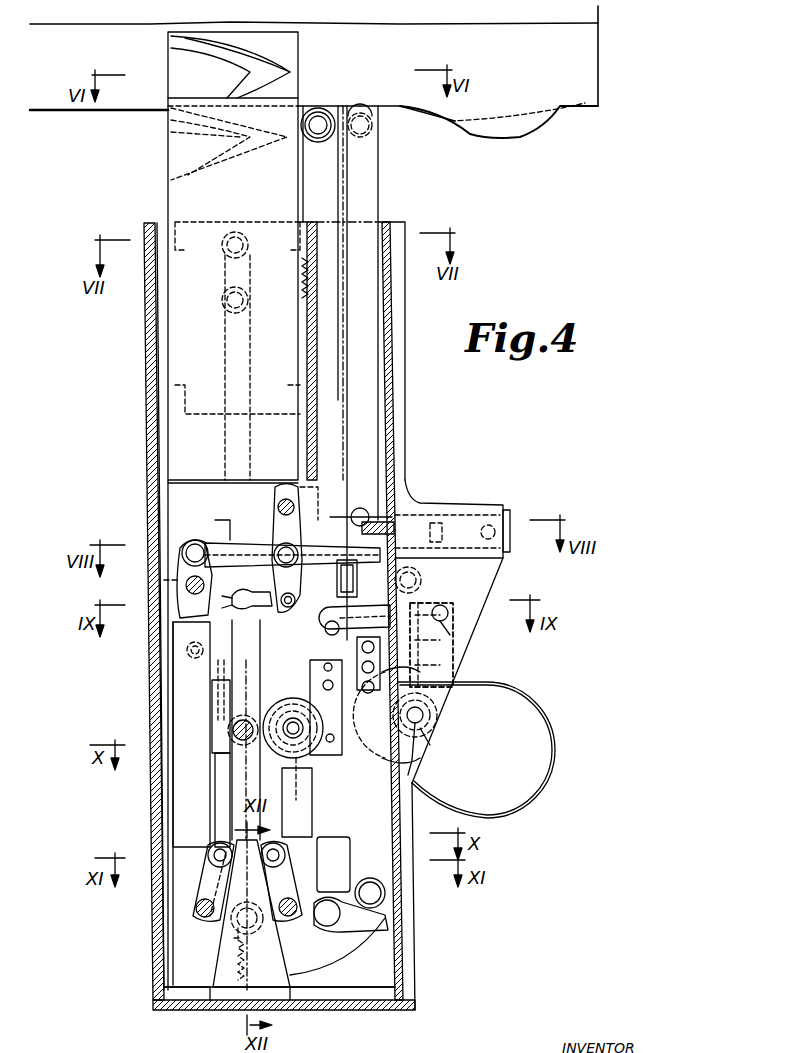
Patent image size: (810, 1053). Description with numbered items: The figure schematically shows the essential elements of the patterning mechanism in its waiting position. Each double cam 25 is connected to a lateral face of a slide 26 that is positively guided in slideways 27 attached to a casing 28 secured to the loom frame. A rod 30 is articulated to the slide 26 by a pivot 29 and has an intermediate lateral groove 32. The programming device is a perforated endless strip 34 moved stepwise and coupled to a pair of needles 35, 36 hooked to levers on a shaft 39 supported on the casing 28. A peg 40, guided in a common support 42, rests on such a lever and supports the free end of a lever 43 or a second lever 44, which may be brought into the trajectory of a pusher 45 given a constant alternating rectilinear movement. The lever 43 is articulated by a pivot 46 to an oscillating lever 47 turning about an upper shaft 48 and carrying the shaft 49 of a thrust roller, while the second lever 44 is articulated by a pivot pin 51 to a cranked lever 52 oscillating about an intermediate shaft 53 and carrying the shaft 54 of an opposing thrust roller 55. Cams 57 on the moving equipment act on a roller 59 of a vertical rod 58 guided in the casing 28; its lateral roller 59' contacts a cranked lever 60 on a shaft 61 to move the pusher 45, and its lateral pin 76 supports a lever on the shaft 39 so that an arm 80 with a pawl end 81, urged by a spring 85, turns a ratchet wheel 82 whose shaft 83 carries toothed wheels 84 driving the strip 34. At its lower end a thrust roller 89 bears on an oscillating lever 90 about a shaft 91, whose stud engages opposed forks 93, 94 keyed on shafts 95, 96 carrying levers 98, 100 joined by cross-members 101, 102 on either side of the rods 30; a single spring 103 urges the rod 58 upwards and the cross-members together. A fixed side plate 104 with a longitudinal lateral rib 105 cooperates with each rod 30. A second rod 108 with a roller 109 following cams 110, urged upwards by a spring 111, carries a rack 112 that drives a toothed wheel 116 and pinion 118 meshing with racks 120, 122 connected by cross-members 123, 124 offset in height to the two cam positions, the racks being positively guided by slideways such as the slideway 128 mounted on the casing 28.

The double cam 25 is at (196, 48).
The slide 26 is at (298, 50).
The slideways 27 is at (155, 322).
The casing 28 is at (158, 490).
The pivot 29 is at (222, 255).
The rod 30 is at (215, 520).
The lateral groove 32 is at (222, 780).
The perforated endless strip 34 is at (548, 792).
The feeler needle 35 is at (452, 660).
The feeler needle 36 is at (431, 645).
The shaft 39 is at (335, 612).
The peg 40 is at (296, 598).
The common support 42 is at (357, 578).
The lever 43 is at (325, 548).
The second lever 44 is at (205, 542).
The pusher 45 is at (425, 520).
The pivot 46 is at (286, 548).
The oscillating lever 47 is at (280, 487).
The upper shaft 48 is at (286, 498).
The shaft 49 is at (250, 612).
The pivot pin 51 is at (182, 553).
The cranked lever 52 is at (164, 580).
The intermediate shaft 53 is at (190, 594).
The shaft 54 is at (195, 658).
The thrust roller 55 is at (180, 645).
The cam 57 is at (437, 121).
The vertical rod 58 is at (378, 172).
The roller 59 is at (378, 121).
The lateral roller 59' is at (361, 501).
The cranked lever 60 is at (421, 586).
The shaft 61 is at (416, 576).
The lateral pin 76 is at (357, 653).
The arm 80 is at (437, 705).
The pawl end 81 is at (430, 718).
The ratchet wheel 82 is at (410, 768).
The shaft 83 is at (430, 745).
The toothed wheel 84 is at (423, 720).
The spring 85 is at (448, 613).
The thrust roller 89 is at (370, 878).
The oscillating lever 90 is at (340, 960).
The shaft 91 is at (330, 926).
The fork 93 is at (218, 947).
The fork 94 is at (262, 940).
The shaft 95 is at (279, 913).
The shaft 96 is at (278, 870).
The lever 98 is at (196, 906).
The lever 100 is at (310, 868).
The cross-member 101 is at (213, 870).
The cross-member 102 is at (290, 820).
The spring 103 is at (234, 965).
The fixed side plate 104 is at (240, 1000).
The longitudinal lateral rib 105 is at (214, 884).
The second rod 108 is at (333, 212).
The roller 109 is at (327, 140).
The cam 110 is at (472, 137).
The spring 111 is at (300, 298).
The rack 112 is at (335, 755).
The toothed wheel 116 is at (290, 760).
The pinion 118 is at (240, 745).
The rack 120 is at (215, 740).
The rack 122 is at (292, 797).
The cross-member 123 is at (218, 700).
The cross-member 124 is at (275, 788).
The roller 128 is at (208, 855).